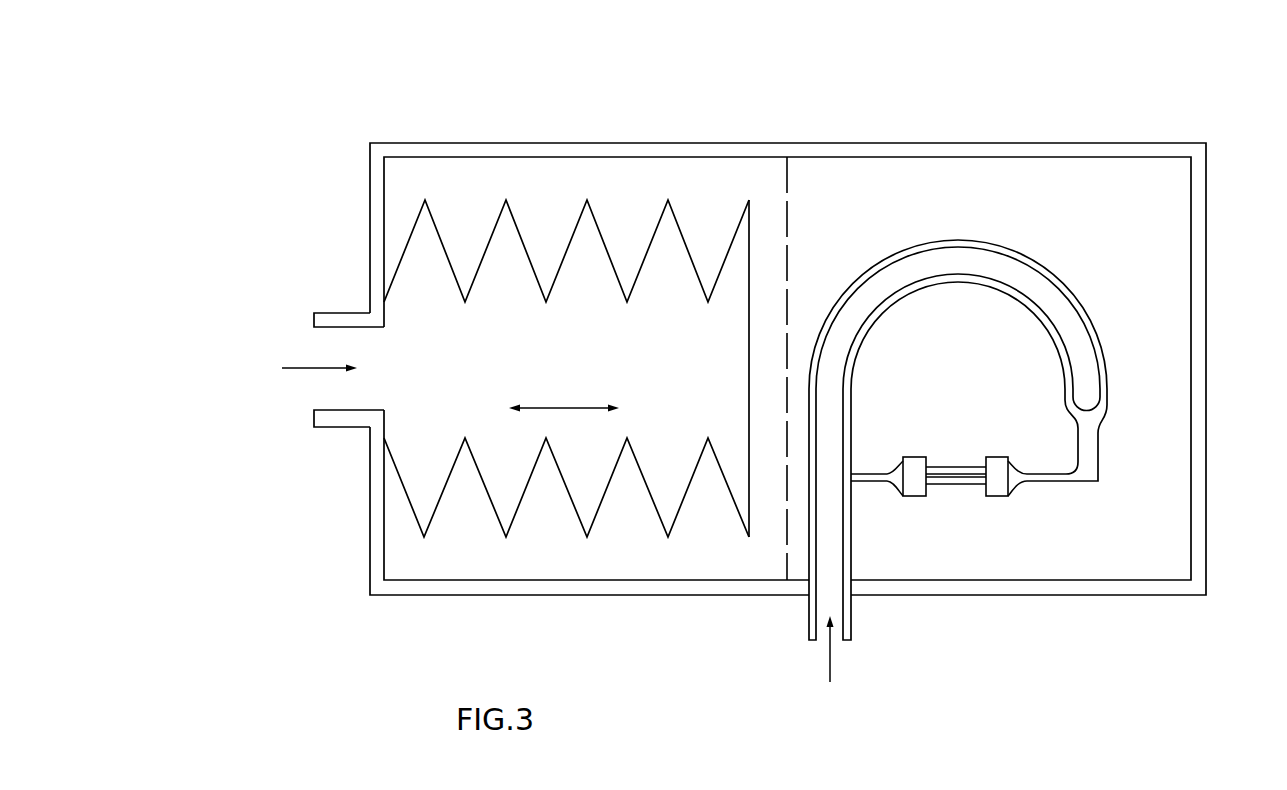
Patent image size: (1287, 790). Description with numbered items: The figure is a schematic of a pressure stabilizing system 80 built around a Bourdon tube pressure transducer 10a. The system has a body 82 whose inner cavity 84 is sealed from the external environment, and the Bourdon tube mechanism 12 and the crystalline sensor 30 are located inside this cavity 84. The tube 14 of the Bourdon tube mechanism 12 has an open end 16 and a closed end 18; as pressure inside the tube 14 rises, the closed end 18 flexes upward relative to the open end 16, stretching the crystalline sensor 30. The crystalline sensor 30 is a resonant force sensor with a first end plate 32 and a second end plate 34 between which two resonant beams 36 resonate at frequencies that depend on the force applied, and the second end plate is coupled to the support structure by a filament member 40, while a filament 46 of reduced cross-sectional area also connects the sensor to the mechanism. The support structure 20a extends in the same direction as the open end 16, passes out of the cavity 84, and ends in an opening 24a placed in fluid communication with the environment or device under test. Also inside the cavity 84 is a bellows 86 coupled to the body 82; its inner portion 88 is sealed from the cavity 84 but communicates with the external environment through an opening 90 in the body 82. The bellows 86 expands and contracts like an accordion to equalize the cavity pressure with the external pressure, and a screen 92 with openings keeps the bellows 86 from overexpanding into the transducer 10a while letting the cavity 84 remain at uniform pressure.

The pressure stabilizing system 80 is at (1005, 46).
The body 82 is at (1088, 143).
The inner cavity 84 is at (827, 200).
The bellows 86 is at (575, 228).
The inner portion 88 is at (568, 364).
The opening 90 is at (322, 332).
The screen 92 is at (788, 264).
The Bourdon tube pressure transducer 10a is at (1147, 291).
The Bourdon tube mechanism 12 is at (1080, 253).
The tube 14 is at (958, 239).
The open end 16 is at (809, 410).
The closed end 18 is at (1086, 466).
The support structure 20a is at (810, 552).
The opening 24a is at (848, 642).
The crystalline sensor 30 is at (957, 502).
The first end plate 32 is at (1001, 457).
The second end plate 34 is at (916, 457).
The resonant beams 36 is at (955, 467).
The filament member 40 is at (873, 497).
The filament 46 is at (872, 474).